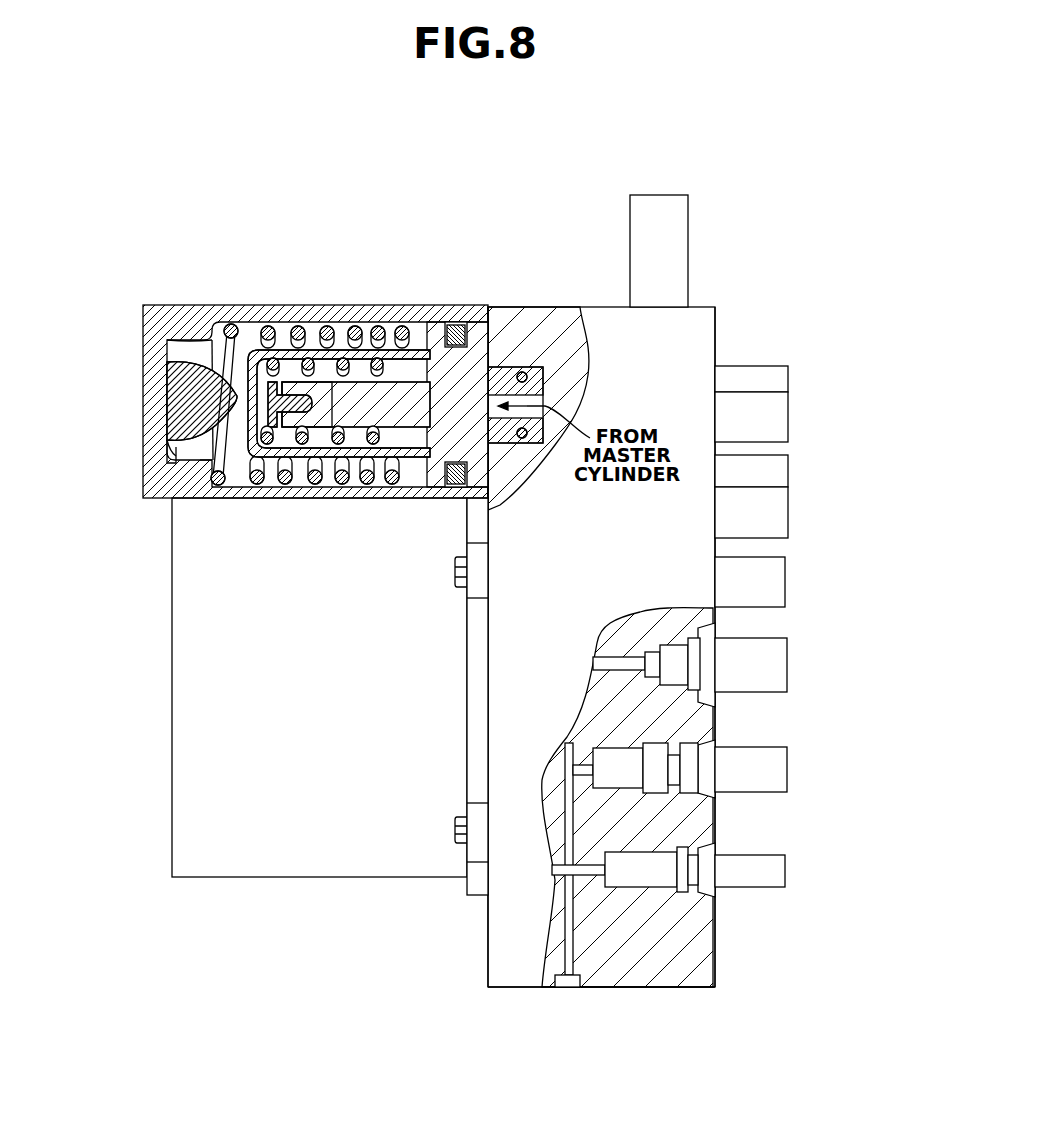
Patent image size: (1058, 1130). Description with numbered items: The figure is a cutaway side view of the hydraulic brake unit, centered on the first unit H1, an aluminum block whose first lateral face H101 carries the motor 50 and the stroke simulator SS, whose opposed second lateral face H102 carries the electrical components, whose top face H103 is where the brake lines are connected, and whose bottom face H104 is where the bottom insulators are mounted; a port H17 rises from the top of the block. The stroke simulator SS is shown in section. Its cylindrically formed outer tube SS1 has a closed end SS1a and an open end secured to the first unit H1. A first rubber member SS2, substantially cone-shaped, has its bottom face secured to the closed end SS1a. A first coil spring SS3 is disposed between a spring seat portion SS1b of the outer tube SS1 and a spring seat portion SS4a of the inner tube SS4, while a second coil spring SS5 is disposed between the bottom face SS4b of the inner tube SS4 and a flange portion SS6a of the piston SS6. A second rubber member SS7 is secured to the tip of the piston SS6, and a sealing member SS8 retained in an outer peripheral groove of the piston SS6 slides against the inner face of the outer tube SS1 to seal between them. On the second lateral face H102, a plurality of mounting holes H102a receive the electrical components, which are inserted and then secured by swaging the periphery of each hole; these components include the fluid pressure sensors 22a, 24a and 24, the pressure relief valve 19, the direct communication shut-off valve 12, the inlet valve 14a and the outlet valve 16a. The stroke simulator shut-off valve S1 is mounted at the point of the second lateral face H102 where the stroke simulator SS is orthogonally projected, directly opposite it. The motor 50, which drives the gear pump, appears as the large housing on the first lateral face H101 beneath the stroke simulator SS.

The stroke simulator SS is at (203, 300).
The outer tube SS1 is at (255, 312).
The closed end SS1a is at (163, 455).
The spring seat portion SS1b is at (210, 458).
The first rubber member SS2 is at (170, 410).
The first coil spring SS3 is at (307, 320).
The inner tube SS4 is at (268, 458).
The spring seat portion SS4a is at (405, 320).
The bottom face SS4b is at (231, 485).
The second coil spring SS5 is at (335, 458).
The piston SS6 is at (390, 425).
The flange portion SS6a is at (425, 462).
The second rubber member SS7 is at (163, 338).
The sealing member SS8 is at (458, 485).
The first unit H1 is at (594, 300).
The reservoir port H17 is at (645, 195).
The first lateral face H101 is at (488, 937).
The second lateral face H102 is at (718, 322).
The mounting hole H102a is at (712, 693).
The top face H103 is at (520, 305).
The bottom face H104 is at (520, 988).
The fluid pressure sensor 22a is at (790, 383).
The stroke simulator shut-off valve S1 is at (790, 418).
The pressure relief valve 19 is at (790, 470).
The direct communication shut-off valve 12 is at (790, 510).
The fluid pressure sensor 24a is at (787, 577).
The fluid pressure sensor 24 is at (787, 660).
The inlet valve 14a is at (787, 763).
The outlet valve 16a is at (785, 865).
The motor 50 is at (305, 877).